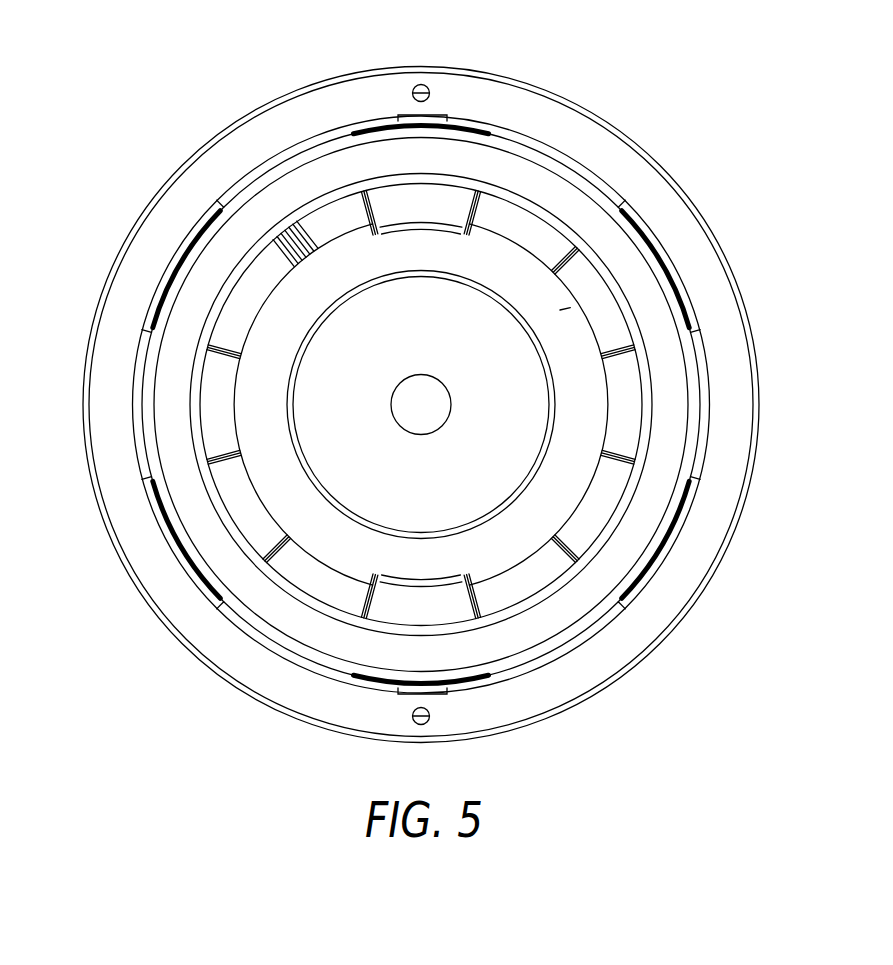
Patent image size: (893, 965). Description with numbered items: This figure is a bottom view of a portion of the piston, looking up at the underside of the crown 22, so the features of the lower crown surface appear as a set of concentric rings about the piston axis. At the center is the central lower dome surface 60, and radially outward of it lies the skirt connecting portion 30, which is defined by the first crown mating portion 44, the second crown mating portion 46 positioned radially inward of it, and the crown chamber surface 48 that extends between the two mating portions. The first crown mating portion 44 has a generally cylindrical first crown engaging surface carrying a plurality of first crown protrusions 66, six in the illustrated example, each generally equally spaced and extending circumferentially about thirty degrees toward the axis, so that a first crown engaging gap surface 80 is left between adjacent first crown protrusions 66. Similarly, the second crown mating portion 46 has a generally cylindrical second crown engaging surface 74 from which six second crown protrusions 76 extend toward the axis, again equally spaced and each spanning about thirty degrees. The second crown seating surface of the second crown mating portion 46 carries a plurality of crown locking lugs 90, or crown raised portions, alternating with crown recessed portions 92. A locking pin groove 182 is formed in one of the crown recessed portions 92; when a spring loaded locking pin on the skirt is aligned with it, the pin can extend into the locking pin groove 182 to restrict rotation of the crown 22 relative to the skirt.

The crown 22 is at (693, 80).
The skirt connecting portion 30 is at (564, 98).
The first crown mating portion 44 is at (652, 204).
The second crown mating portion 46 is at (187, 437).
The crown chamber surface 48 is at (620, 558).
The central lower dome surface 60 is at (490, 380).
The first crown protrusions 66 is at (390, 127).
The second crown engaging surface 74 is at (510, 570).
The second crown protrusions 76 is at (400, 230).
The first crown engaging gap surface 80 is at (313, 633).
The crown locking lugs 90 is at (430, 200).
The crown recessed portions 92 is at (335, 222).
The locking pin groove 182 is at (290, 243).